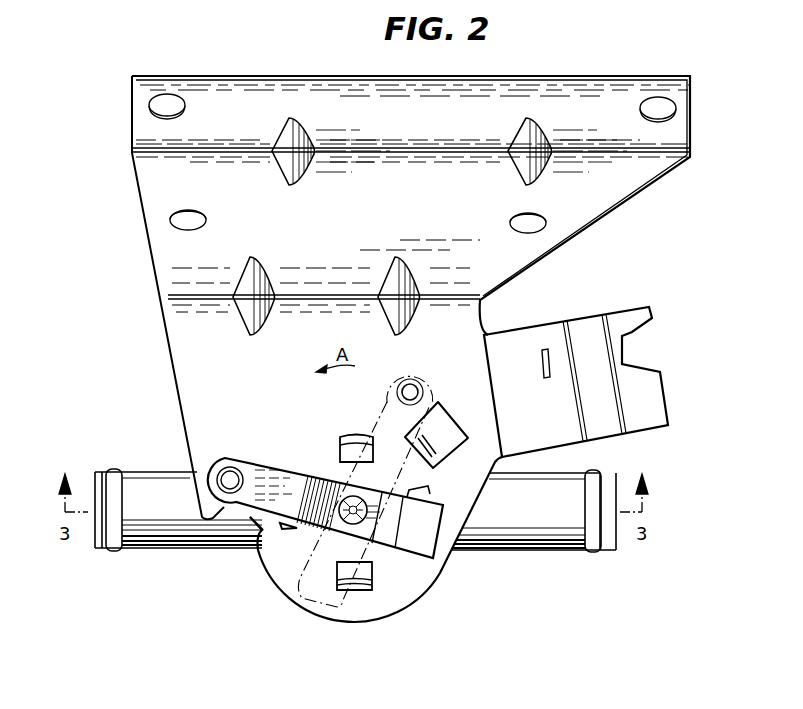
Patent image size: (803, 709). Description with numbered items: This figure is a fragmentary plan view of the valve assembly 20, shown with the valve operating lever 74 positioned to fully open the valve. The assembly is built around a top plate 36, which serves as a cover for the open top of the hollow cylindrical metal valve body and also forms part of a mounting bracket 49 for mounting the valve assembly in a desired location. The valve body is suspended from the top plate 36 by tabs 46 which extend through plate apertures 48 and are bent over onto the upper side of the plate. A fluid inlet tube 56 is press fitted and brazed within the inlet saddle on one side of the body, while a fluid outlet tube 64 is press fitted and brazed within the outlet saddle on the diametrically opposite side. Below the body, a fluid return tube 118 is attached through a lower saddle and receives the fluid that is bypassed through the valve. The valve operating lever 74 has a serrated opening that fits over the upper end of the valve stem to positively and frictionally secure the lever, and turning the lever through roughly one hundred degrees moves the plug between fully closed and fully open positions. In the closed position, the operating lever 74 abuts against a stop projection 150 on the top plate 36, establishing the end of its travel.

The valve assembly 20 is at (150, 384).
The top plate 36 is at (435, 582).
The tabs 46 is at (341, 456).
The plate apertures 48 is at (354, 436).
The mounting bracket 49 is at (484, 320).
The fluid inlet tube 56 is at (155, 540).
The fluid outlet tube 64 is at (533, 548).
The valve operating lever 74 is at (268, 468).
The fluid return tube 118 is at (203, 540).
The stop projection 150 is at (385, 490).